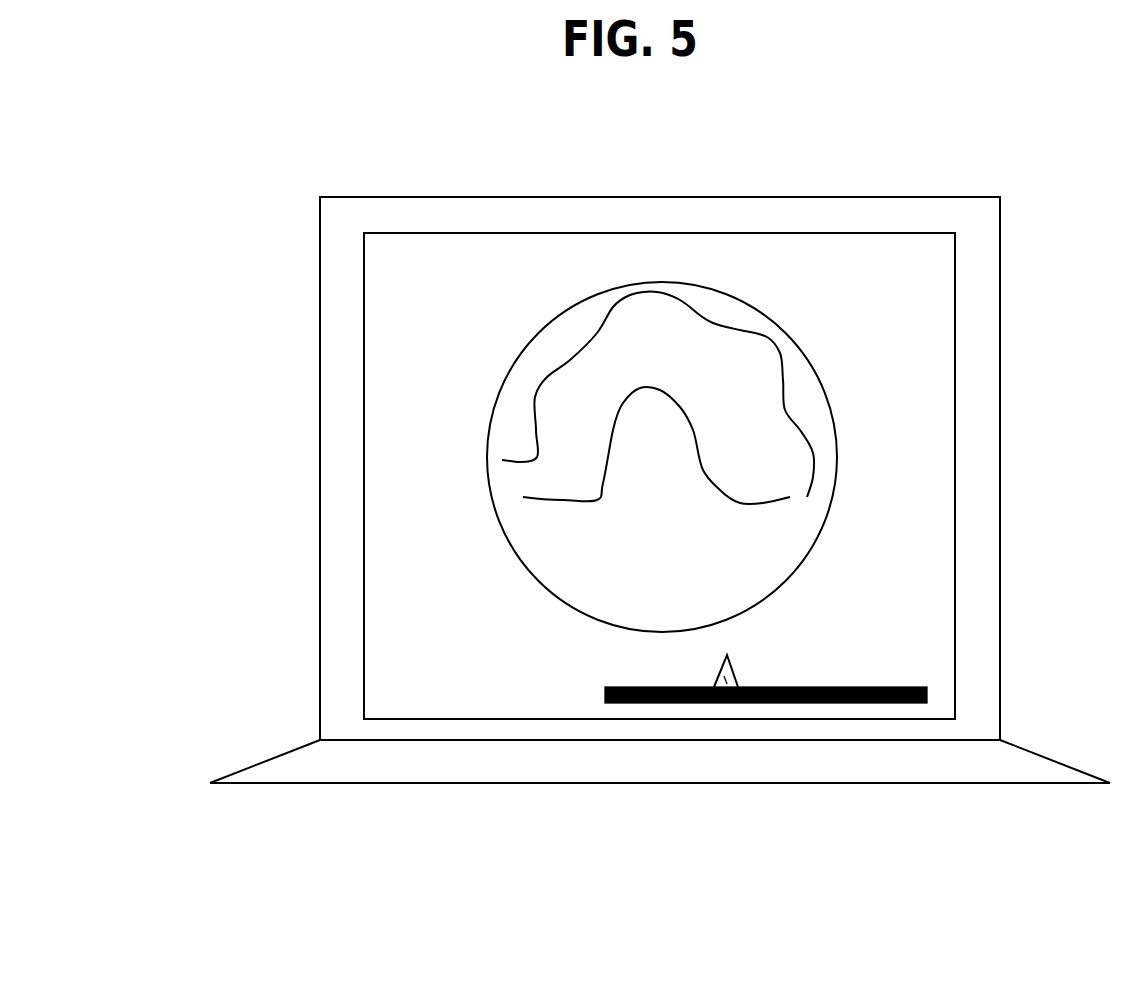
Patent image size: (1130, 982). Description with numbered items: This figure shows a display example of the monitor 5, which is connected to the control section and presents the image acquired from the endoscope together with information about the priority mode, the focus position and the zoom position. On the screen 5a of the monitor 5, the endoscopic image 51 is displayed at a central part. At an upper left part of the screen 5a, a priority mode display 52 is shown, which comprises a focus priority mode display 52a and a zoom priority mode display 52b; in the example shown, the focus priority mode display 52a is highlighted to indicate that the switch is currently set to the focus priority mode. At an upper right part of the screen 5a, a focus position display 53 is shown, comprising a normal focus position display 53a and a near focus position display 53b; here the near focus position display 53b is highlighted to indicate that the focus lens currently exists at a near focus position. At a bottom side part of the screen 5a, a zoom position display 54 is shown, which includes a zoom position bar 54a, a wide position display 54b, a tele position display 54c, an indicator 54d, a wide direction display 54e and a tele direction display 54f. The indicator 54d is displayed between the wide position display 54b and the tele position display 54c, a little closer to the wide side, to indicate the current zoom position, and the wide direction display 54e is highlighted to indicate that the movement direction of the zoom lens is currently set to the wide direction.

The monitor 5 is at (662, 196).
The screen 5a is at (955, 390).
The endoscopic image 51 is at (836, 456).
The priority mode display 52 is at (376, 272).
The focus priority mode display 52a is at (385, 262).
The zoom priority mode display 52b is at (385, 292).
The focus position display 53 is at (975, 271).
The normal focus position display 53a is at (910, 262).
The near focus position display 53b is at (908, 292).
The zoom position display 54 is at (756, 764).
The zoom position bar 54a is at (773, 703).
The wide position display 54b is at (587, 682).
The tele position display 54c is at (942, 682).
The indicator 54d is at (725, 683).
The wide direction display 54e is at (703, 647).
The tele direction display 54f is at (825, 740).